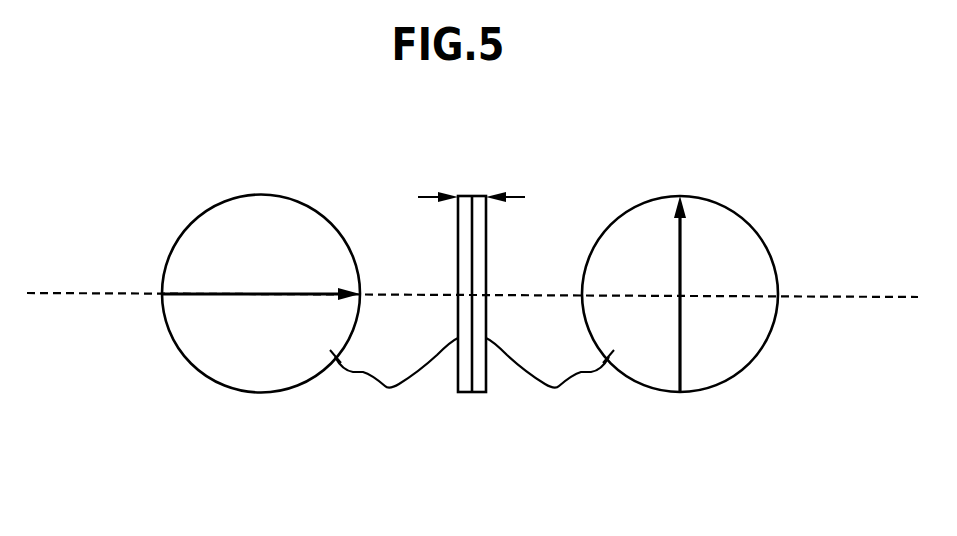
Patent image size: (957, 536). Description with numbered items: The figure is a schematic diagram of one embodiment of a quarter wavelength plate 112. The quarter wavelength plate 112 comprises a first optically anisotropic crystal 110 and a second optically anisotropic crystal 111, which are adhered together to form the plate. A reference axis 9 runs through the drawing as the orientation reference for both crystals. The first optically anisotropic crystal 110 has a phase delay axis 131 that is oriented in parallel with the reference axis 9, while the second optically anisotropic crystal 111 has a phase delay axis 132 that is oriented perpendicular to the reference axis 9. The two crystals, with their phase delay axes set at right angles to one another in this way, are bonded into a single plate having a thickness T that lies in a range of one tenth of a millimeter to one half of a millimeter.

The reference axis 9 is at (107, 297).
The phase delay axis 131 is at (203, 292).
The phase delay axis 132 is at (683, 253).
The quarter wavelength plate 112 is at (443, 166).
The thickness T is at (483, 197).
The first optically anisotropic crystal 110 is at (394, 378).
The second optically anisotropic crystal 111 is at (550, 378).